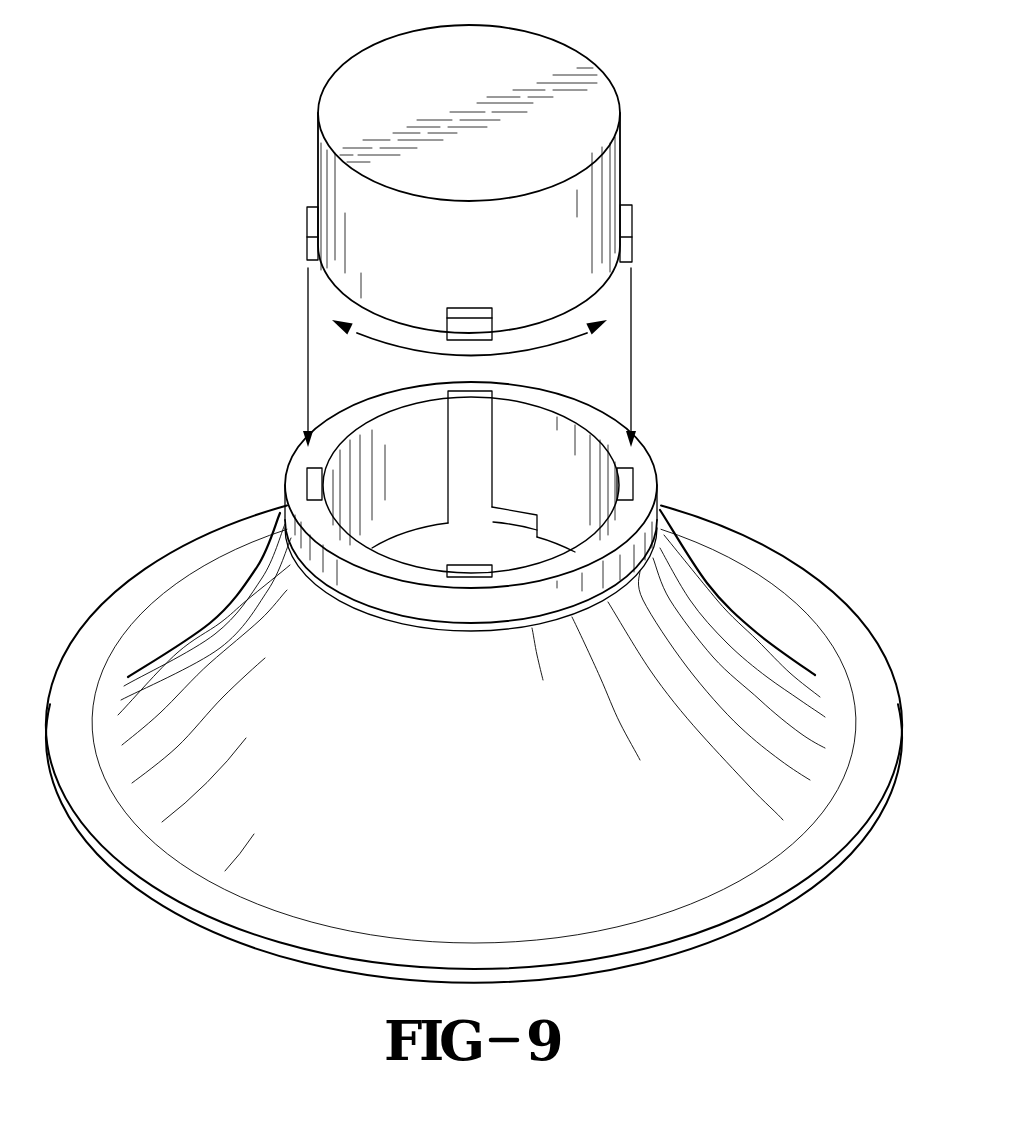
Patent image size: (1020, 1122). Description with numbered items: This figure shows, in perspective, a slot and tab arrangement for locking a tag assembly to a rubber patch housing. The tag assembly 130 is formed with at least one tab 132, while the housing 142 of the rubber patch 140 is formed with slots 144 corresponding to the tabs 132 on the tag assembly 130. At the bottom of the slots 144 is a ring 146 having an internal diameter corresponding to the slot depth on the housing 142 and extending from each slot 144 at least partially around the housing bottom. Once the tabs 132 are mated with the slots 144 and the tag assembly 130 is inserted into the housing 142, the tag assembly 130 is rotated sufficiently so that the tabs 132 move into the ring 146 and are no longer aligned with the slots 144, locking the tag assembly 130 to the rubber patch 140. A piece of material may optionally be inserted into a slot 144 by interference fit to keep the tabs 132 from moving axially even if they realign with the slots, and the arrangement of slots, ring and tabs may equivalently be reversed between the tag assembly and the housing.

The tag assembly 130 is at (628, 166).
The tab 132 is at (310, 222).
The rubber patch 140 is at (722, 610).
The housing 142 is at (358, 412).
The slot 144 is at (470, 443).
The ring 146 is at (513, 518).